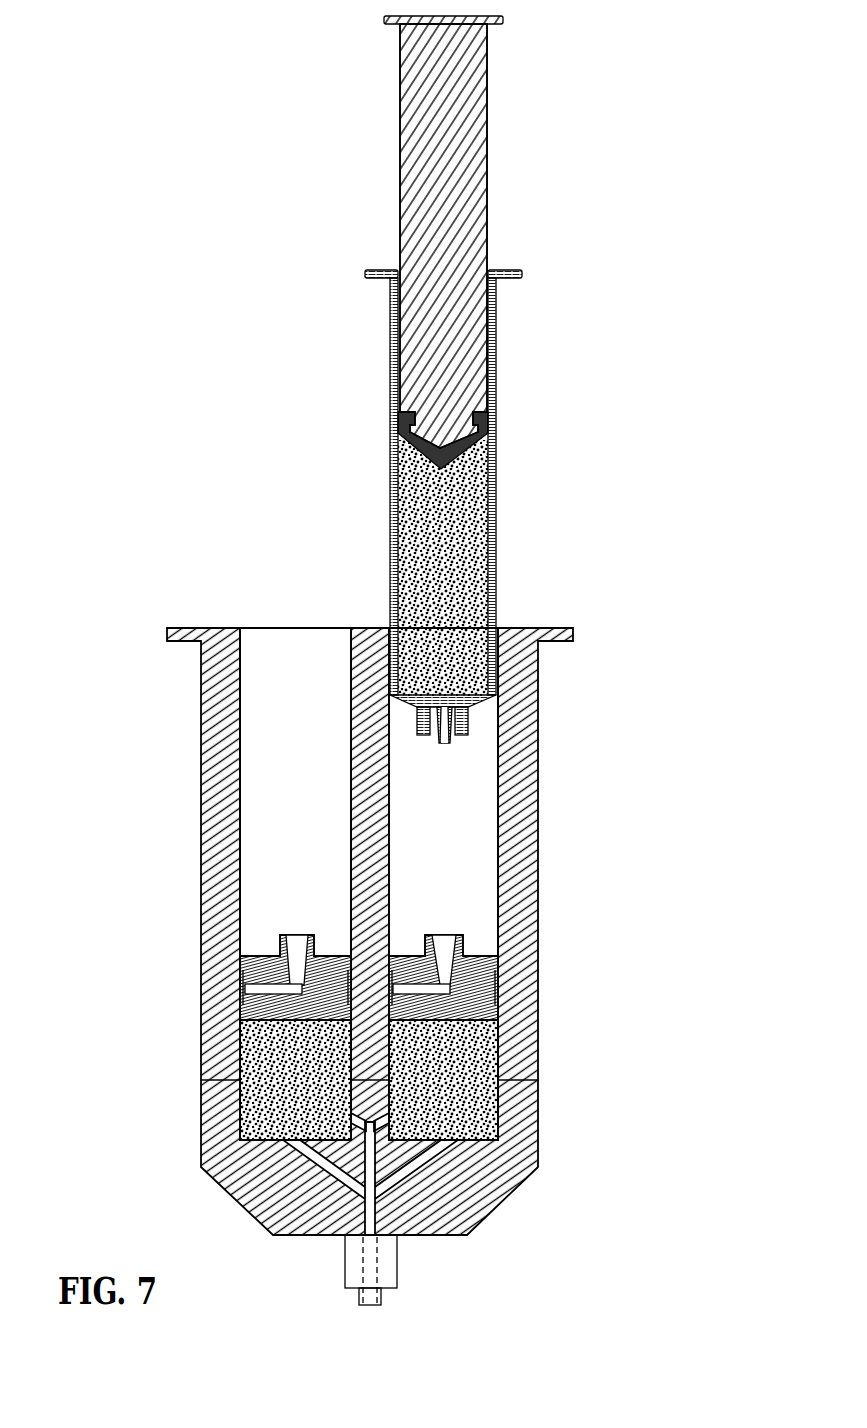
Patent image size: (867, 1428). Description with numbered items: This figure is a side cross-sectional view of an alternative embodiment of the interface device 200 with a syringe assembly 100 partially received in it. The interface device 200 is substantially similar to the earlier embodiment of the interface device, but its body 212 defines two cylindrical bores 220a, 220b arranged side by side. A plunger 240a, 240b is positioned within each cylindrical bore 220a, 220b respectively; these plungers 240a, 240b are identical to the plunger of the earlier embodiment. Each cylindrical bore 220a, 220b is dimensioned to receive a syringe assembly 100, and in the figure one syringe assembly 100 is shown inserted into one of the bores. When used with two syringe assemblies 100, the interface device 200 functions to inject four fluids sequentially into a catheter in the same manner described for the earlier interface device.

The interface device 200 is at (164, 296).
The syringe assembly 100 is at (502, 389).
The body 212 is at (542, 808).
The cylindrical bore 220a is at (263, 757).
The cylindrical bore 220b is at (462, 775).
The plunger 240a is at (258, 950).
The plunger 240b is at (492, 953).